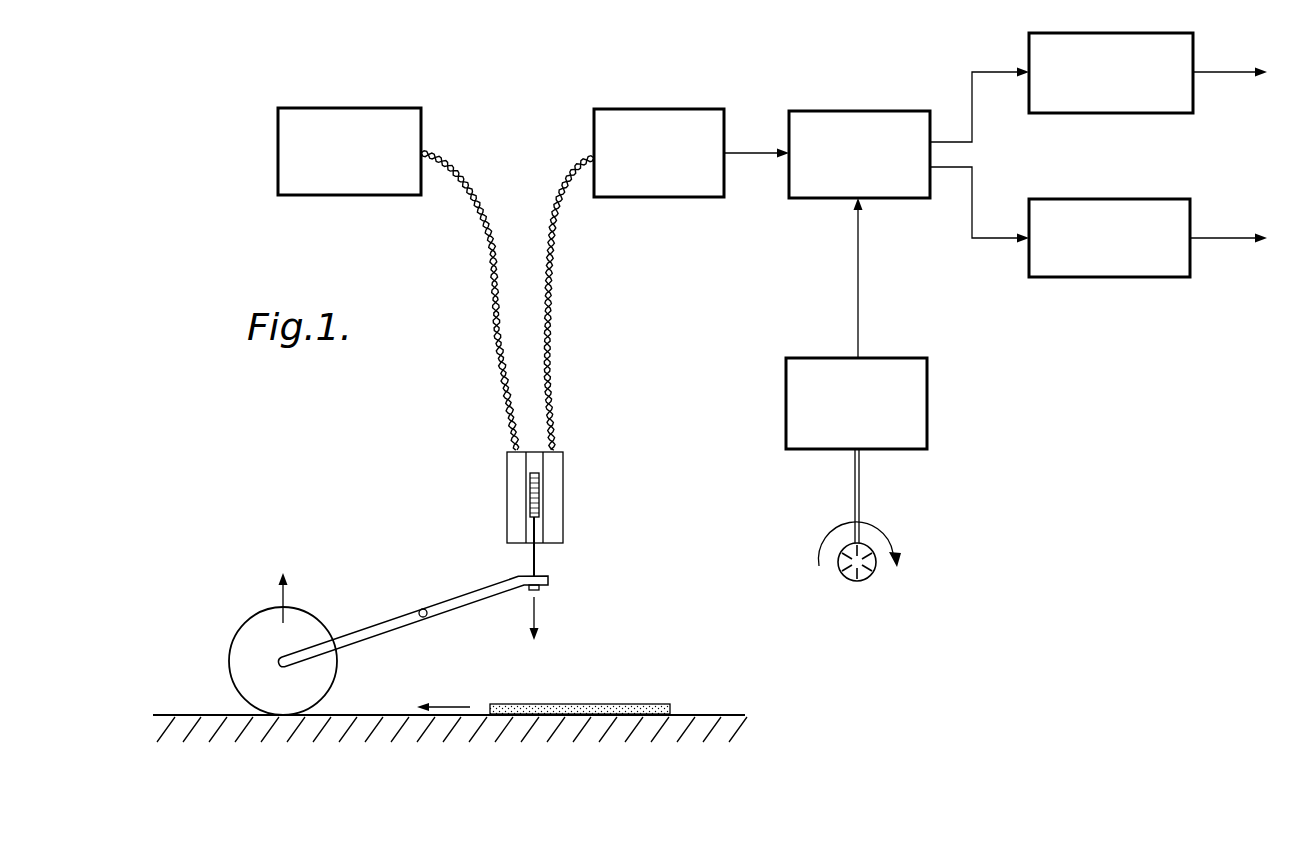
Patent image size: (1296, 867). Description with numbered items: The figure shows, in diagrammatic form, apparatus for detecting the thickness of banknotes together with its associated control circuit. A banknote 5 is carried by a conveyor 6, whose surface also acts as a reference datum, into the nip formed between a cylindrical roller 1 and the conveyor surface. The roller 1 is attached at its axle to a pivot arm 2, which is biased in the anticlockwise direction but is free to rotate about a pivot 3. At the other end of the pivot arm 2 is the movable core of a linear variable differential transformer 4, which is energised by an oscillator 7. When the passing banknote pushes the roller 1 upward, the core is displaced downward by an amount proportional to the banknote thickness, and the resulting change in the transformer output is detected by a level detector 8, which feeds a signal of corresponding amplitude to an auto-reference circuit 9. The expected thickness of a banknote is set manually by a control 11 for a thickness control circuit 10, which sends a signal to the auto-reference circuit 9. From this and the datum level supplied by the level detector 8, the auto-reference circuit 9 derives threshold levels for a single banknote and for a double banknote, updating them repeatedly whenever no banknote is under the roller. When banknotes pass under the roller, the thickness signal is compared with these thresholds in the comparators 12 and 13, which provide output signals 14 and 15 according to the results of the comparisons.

The cylindrical roller 1 is at (232, 645).
The pivot arm 2 is at (368, 625).
The pivot 3 is at (424, 608).
The linear variable differential transformer (LVDT) 4 is at (563, 507).
The banknote 5 is at (610, 704).
The conveyor 6 is at (708, 716).
The oscillator 7 is at (420, 117).
The level detector 8 is at (594, 118).
The auto-reference circuit 9 is at (789, 113).
The thickness control circuit 10 is at (790, 358).
The control 11 is at (913, 551).
The comparator 12 is at (1029, 268).
The comparator 13 is at (1029, 40).
The output signal 14 is at (1230, 60).
The output signal 15 is at (1228, 225).